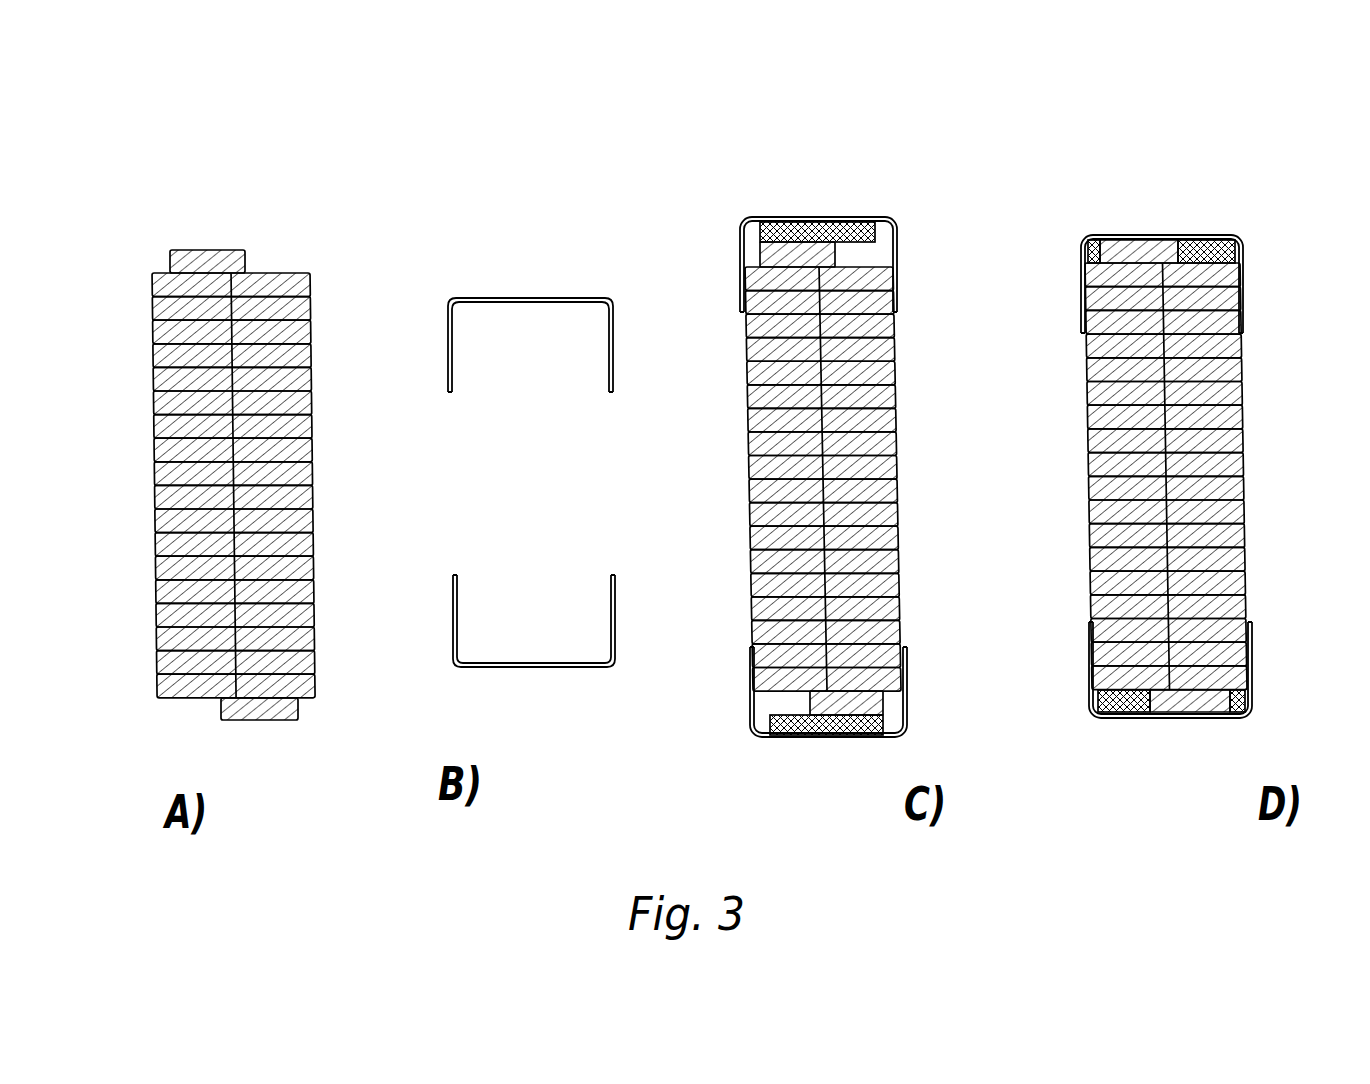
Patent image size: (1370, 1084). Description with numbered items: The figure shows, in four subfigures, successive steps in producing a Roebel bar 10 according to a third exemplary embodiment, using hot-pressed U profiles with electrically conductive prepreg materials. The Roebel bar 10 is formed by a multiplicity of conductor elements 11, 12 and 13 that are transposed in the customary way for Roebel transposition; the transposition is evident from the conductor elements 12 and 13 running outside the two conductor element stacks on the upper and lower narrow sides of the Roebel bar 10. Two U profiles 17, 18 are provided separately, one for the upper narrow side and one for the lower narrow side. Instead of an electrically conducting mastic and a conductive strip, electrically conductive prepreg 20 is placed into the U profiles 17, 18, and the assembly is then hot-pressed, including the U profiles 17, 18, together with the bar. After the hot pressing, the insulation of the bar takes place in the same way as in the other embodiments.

The Roebel bar 10 is at (245, 212).
The conductor elements 11 is at (312, 480).
The conductor element 12 is at (190, 252).
The conductor element 13 is at (261, 720).
The U profile 17 is at (538, 298).
The U profile 18 is at (535, 667).
The electrically conductive prepreg 20 is at (797, 230).